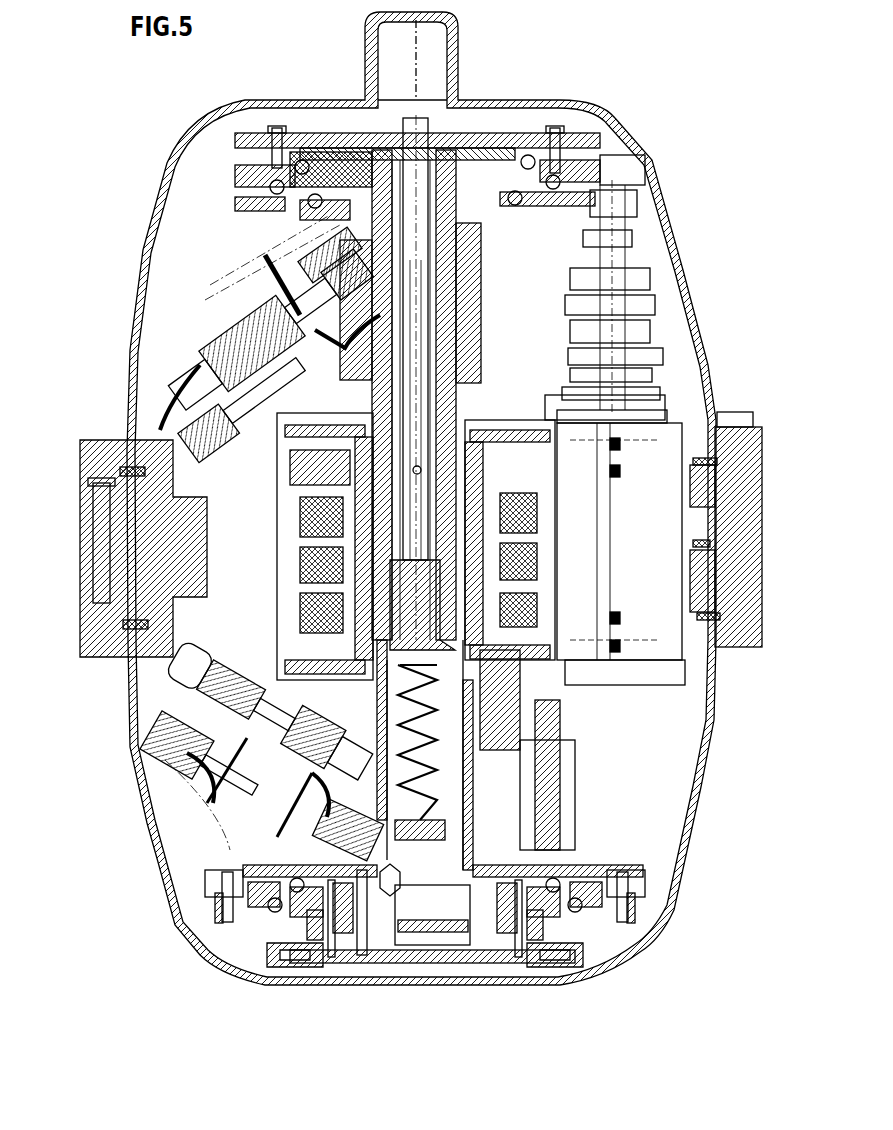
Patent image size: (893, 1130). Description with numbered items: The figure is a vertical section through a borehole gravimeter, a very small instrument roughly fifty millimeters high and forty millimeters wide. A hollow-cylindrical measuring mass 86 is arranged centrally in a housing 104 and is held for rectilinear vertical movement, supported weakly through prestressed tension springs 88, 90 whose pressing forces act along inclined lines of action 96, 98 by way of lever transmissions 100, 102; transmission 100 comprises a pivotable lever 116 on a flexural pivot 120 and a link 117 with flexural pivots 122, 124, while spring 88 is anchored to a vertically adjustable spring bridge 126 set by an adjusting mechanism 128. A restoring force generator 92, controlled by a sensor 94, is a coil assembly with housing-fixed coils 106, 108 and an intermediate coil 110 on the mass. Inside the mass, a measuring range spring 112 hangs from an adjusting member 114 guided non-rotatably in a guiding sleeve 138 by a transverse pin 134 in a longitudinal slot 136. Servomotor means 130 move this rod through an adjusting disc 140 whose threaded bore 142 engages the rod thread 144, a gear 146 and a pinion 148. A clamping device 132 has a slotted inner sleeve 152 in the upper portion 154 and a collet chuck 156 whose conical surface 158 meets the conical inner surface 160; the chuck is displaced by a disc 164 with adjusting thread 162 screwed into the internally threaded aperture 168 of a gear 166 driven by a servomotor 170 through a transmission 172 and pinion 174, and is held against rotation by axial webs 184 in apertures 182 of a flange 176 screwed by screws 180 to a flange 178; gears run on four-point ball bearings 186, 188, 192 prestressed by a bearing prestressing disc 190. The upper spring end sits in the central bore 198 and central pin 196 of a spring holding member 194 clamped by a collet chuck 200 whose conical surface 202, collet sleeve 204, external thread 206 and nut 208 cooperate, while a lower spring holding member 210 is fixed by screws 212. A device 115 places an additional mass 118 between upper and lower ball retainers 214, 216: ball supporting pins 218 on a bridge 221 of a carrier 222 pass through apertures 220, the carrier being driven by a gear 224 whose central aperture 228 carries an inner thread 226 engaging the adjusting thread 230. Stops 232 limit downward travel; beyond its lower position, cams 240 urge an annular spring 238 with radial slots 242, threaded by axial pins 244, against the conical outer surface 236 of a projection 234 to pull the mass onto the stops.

The measuring mass 86 is at (300, 565).
The spring 88 is at (205, 280).
The spring 90 is at (220, 810).
The restoring force generator 92 is at (560, 676).
The sensor 94 is at (690, 440).
The line of action 96 is at (200, 377).
The line of action 98 is at (173, 777).
The lever transmission 100 is at (167, 400).
The lever transmission 102 is at (163, 707).
The housing 104 is at (734, 412).
The housing-fixed coil 106 is at (620, 503).
The housing-fixed coil 108 is at (620, 575).
The intermediate coil 110 is at (620, 540).
The measuring range spring 112 is at (540, 745).
The adjusting member 114 is at (580, 470).
The device 115 is at (575, 855).
The pivotable lever 116 is at (197, 390).
The link 117 is at (273, 367).
The additional mass 118 is at (300, 857).
The flexural pivot 120 is at (215, 545).
The flexural pivot 122 is at (207, 463).
The flexural pivot 124 is at (213, 283).
The spring bridge 126 is at (340, 262).
The adjusting mechanism 128 is at (600, 282).
The servomotor means 130 is at (457, 133).
The clamping device 132 is at (490, 150).
The transverse pin 134 is at (187, 493).
The longitudinal slot 136 is at (560, 397).
The guiding sleeve 138 is at (287, 468).
The adjusting disc 140 is at (475, 163).
The threaded bore 142 is at (380, 100).
The thread 144 is at (438, 118).
The gear 146 is at (590, 160).
The pinion 148 is at (627, 172).
The inner sleeve 152 is at (610, 340).
The upper portion 154 is at (350, 275).
The collet chuck 156 is at (207, 423).
The conical surface 158 is at (183, 443).
The conical inner surface 160 is at (705, 384).
The adjusting thread 162 is at (315, 177).
The disc 164 is at (347, 173).
The gear 166 is at (740, 215).
The internally threaded aperture 168 is at (530, 158).
The servomotor 170 is at (712, 444).
The transmission 172 is at (660, 368).
The pinion 174 is at (632, 210).
The flange 176 is at (297, 190).
The flange 178 is at (307, 230).
The screws 180 is at (260, 157).
The apertures 182 is at (307, 247).
The axial webs 184 is at (580, 250).
The first four-point ball bearing 186 is at (575, 238).
The second four-point ball bearing 188 is at (550, 192).
The bearing prestressing disc 190 is at (565, 148).
The third four-point ball bearing 192 is at (560, 160).
The spring holding member 194 is at (167, 697).
The central pin 196 is at (700, 628).
The central bore 198 is at (505, 715).
The collet chuck 200 is at (227, 692).
The conical surface 202 is at (520, 700).
The collet sleeve 204 is at (600, 598).
The external thread 206 is at (167, 615).
The nut 208 is at (187, 600).
The spring holding member 210 is at (555, 800).
The screws 212 is at (300, 817).
The upper ball retainer 214 is at (390, 890).
The lower ball retainer 216 is at (330, 880).
The ball supporting pins 218 is at (477, 897).
The apertures 220 is at (523, 903).
The bridge 221 is at (470, 883).
The carrier 222 is at (365, 895).
The gear 224 is at (323, 900).
The inner thread 226 is at (640, 907).
The central aperture 228 is at (363, 900).
The adjusting thread 230 is at (307, 870).
The stops 232 is at (130, 470).
The projection 234 is at (400, 960).
The conical outer surface 236 is at (450, 917).
The annular spring 238 is at (390, 896).
The cams 240 is at (613, 933).
The radial slots 242 is at (302, 933).
The axial pins 244 is at (643, 960).